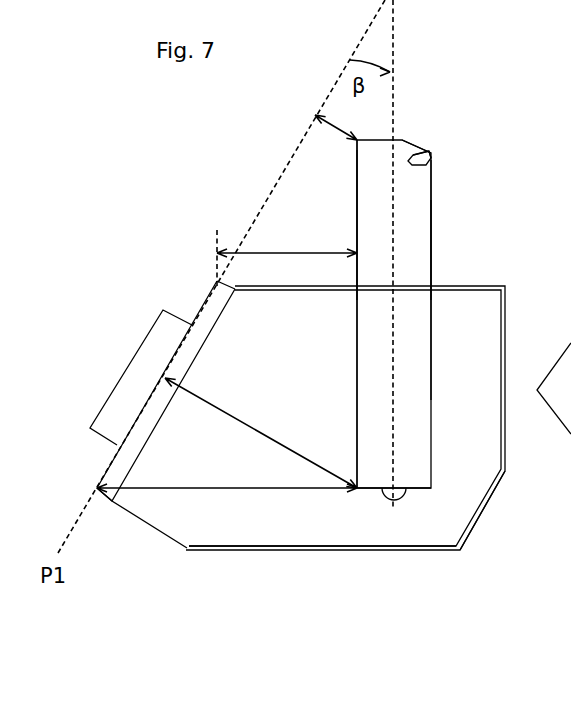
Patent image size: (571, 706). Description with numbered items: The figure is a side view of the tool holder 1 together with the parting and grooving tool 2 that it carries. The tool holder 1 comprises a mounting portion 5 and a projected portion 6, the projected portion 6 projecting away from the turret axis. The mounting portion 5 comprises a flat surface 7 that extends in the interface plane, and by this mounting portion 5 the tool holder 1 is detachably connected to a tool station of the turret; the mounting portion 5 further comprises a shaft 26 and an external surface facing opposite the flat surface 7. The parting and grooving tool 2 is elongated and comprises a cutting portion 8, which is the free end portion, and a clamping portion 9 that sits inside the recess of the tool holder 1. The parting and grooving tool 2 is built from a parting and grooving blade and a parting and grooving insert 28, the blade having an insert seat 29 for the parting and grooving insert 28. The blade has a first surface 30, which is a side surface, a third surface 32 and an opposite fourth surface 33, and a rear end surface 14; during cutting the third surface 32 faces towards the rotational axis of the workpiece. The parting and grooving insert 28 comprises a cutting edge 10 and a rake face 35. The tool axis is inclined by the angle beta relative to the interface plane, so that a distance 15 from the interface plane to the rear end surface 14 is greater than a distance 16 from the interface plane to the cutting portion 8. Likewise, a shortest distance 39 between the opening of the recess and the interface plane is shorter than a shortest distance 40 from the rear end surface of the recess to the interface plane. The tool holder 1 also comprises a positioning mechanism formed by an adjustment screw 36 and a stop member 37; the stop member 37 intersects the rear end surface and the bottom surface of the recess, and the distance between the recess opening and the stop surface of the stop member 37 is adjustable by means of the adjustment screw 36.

The tool holder 1 is at (288, 532).
The parting and grooving tool 2 is at (418, 258).
The mounting portion 5 is at (103, 500).
The projected portion 6 is at (450, 498).
The flat surface 7 is at (208, 302).
The cutting portion 8 is at (368, 225).
The clamping portion 9 is at (369, 394).
The cutting edge 10 is at (435, 147).
The rear end surface 14 is at (415, 490).
The distance 15 is at (261, 433).
The distance 16 is at (339, 121).
The shaft 26 is at (123, 397).
The parting and grooving insert 28 is at (418, 157).
The insert seat 29 is at (442, 138).
The first surface 30 is at (413, 192).
The third surface 32 is at (432, 223).
The fourth surface 33 is at (355, 190).
The rake face 35 is at (428, 150).
The adjustment screw 36 is at (395, 552).
The stop member 37 is at (383, 495).
The shortest distance 39 is at (287, 242).
The shortest distance 40 is at (227, 475).